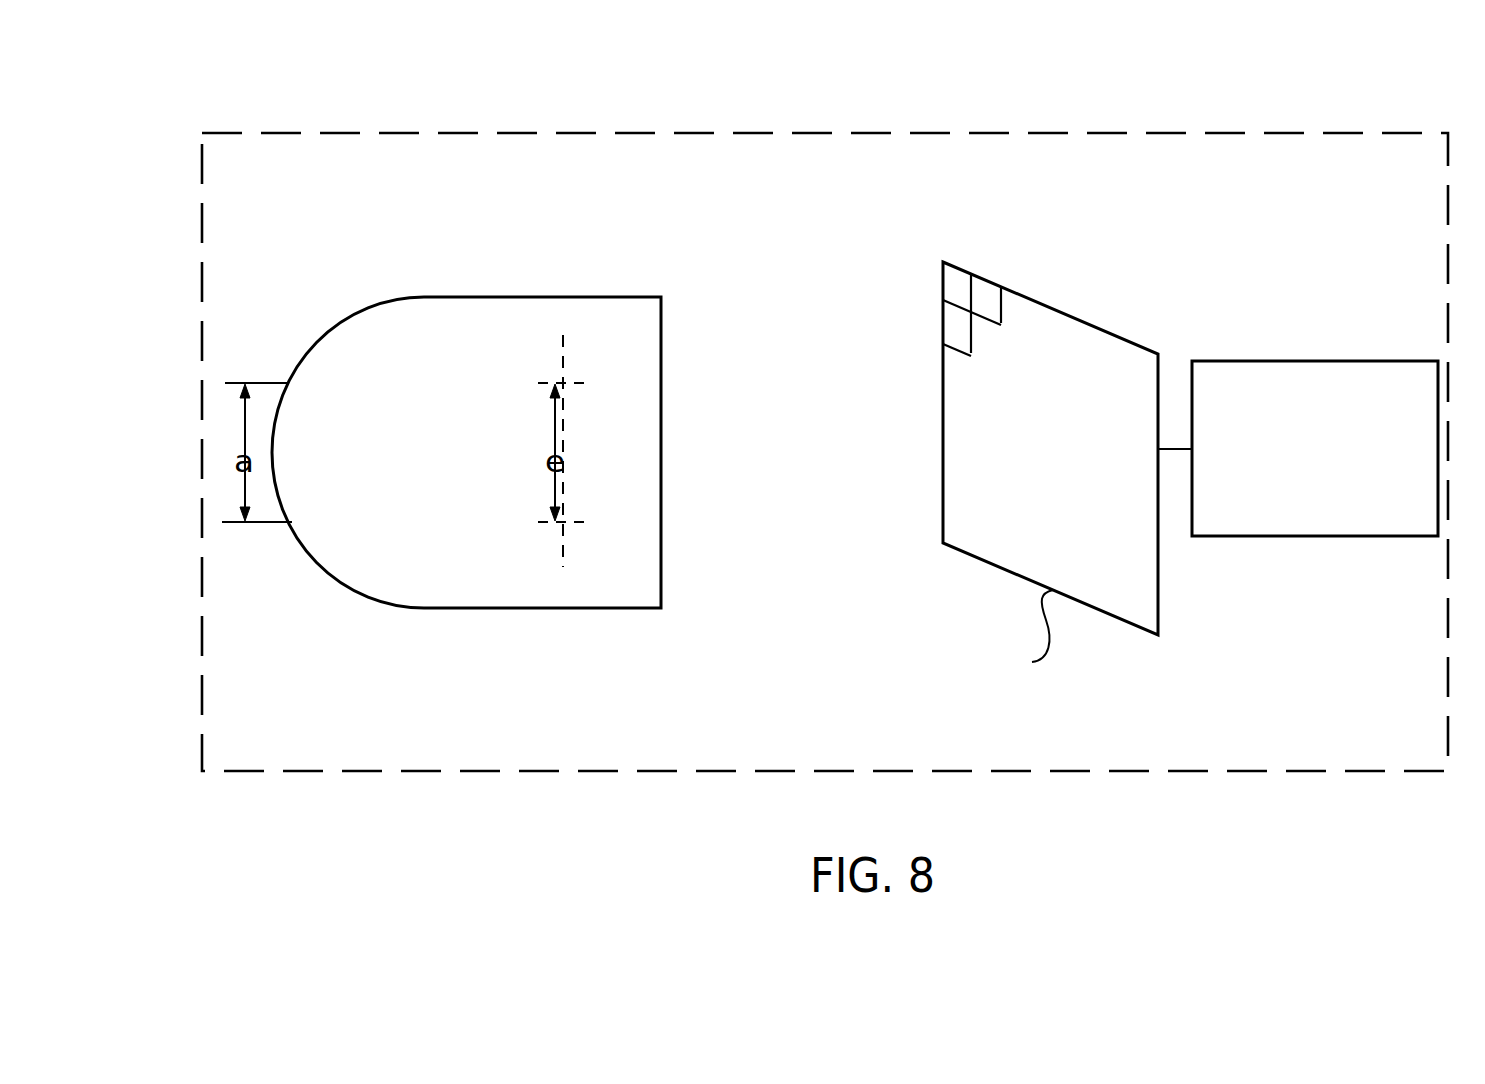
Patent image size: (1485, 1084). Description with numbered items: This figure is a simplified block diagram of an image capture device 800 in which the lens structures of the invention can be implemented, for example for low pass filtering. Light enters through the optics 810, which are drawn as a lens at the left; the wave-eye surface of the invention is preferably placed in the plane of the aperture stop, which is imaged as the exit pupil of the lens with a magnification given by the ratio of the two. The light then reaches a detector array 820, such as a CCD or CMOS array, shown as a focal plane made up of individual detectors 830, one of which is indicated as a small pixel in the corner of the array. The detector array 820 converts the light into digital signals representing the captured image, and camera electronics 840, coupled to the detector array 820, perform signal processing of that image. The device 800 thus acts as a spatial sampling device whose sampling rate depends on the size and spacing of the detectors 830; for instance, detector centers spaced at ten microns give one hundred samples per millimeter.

The image capture device 800 is at (660, 133).
The optics 810 is at (467, 297).
The detector array 820 is at (1053, 308).
The detector 830 is at (963, 291).
The camera electronics 840 is at (1317, 361).